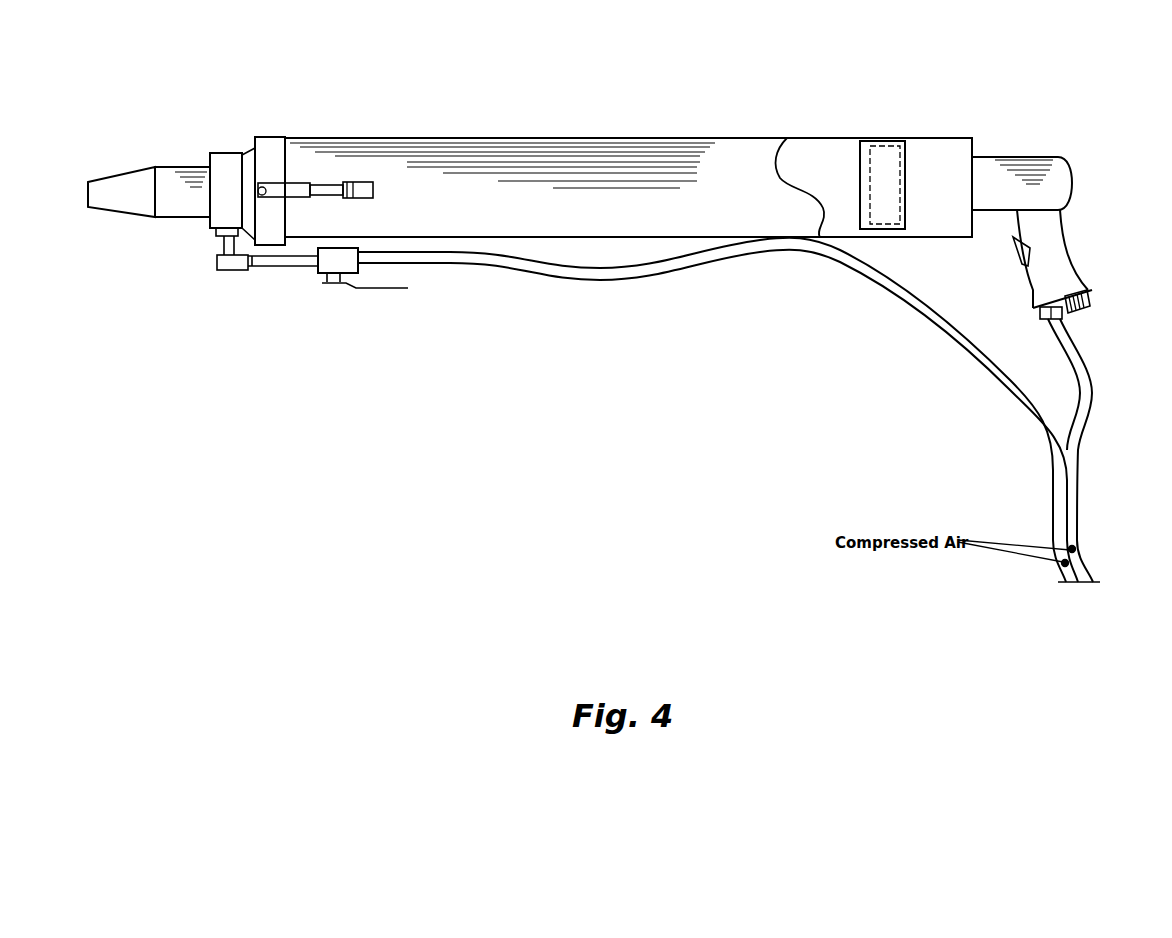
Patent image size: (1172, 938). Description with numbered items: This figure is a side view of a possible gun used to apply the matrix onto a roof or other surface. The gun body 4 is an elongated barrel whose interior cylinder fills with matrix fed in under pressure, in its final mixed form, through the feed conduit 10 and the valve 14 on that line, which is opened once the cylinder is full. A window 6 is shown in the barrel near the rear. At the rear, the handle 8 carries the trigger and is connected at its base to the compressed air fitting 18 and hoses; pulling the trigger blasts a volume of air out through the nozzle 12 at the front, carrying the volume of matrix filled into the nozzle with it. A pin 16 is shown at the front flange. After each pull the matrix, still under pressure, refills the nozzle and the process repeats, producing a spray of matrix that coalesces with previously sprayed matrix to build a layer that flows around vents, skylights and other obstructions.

The barrel 4 is at (568, 135).
The window 6 is at (882, 139).
The handle 8 is at (1022, 155).
The flange 10 is at (268, 132).
The nozzle 12 is at (162, 165).
The valve 14 is at (333, 279).
The pin 16 is at (357, 180).
The air fitting 18 is at (1089, 310).